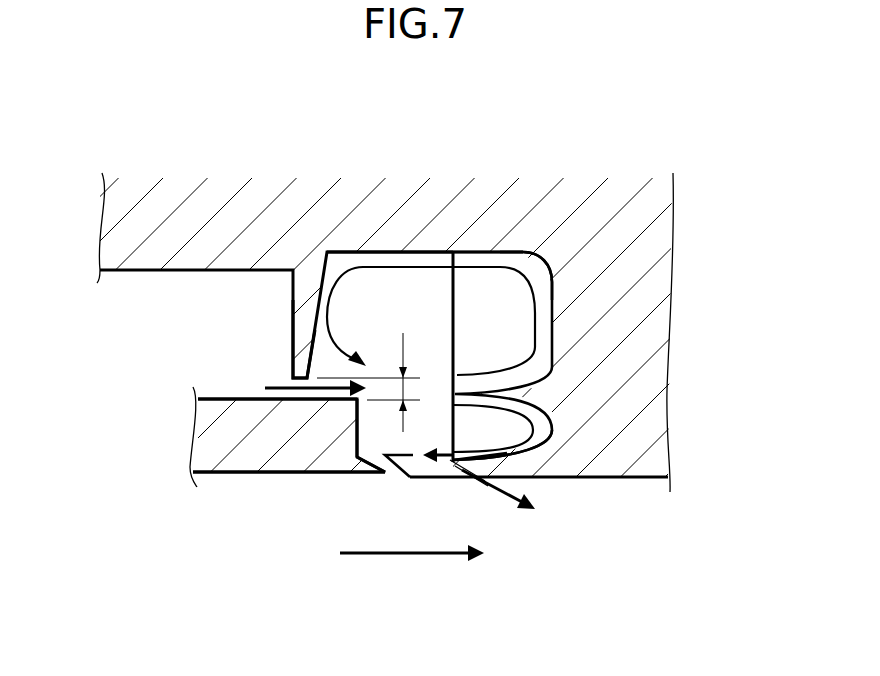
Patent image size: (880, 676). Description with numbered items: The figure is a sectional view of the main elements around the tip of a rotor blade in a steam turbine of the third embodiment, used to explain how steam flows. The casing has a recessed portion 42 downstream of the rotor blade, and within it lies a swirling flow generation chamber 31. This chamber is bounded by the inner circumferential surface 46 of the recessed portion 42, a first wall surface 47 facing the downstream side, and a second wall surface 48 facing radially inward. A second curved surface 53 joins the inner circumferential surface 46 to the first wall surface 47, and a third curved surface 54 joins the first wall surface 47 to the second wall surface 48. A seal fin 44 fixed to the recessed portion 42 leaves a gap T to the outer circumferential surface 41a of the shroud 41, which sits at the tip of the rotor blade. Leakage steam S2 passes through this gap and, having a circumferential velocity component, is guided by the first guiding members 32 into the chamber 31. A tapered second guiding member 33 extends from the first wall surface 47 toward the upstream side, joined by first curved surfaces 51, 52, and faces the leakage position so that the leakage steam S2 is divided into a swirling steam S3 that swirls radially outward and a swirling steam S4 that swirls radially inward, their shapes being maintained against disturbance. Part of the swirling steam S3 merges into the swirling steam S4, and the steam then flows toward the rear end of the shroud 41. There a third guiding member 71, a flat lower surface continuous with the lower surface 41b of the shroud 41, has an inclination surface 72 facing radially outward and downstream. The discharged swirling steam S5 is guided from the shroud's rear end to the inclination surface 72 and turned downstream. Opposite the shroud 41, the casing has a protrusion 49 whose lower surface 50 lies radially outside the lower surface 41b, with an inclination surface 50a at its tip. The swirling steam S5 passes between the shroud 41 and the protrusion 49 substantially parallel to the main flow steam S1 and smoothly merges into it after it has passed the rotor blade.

The recessed portion 42 is at (193, 270).
The seal fin 44 is at (303, 313).
The inner circumferential surface 46 is at (346, 252).
The swirling flow generation chamber 31 is at (408, 290).
The first guiding member 32 is at (445, 265).
The swirling steam S3 is at (520, 265).
The second curved surface 53 is at (543, 298).
The first wall surface 47 is at (553, 308).
The first curved surface 51 is at (552, 342).
The second guiding member 33 is at (438, 375).
The swirling steam S4 is at (438, 403).
The first curved surface 52 is at (552, 428).
The third curved surface 54 is at (515, 452).
The second wall surface 48 is at (497, 460).
The protrusion 49 is at (505, 470).
The lower surface 50 is at (507, 478).
The inclination surface 50a is at (462, 470).
The swirling steam S5 is at (487, 492).
The main flow steam S1 is at (400, 556).
The third guiding member 71 is at (360, 467).
The inclination surface 72 is at (383, 470).
The shroud 41 is at (237, 463).
The outer circumferential surface 41a is at (223, 398).
The lower surface 41b is at (280, 477).
The leakage steam S2 is at (283, 380).
The gap T is at (412, 382).